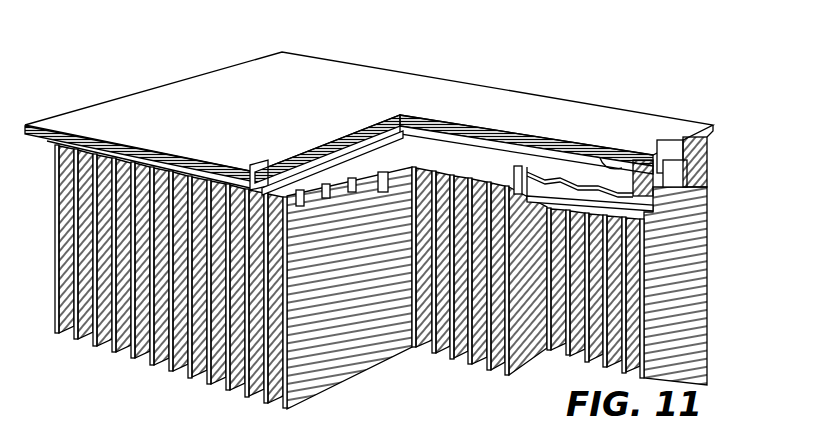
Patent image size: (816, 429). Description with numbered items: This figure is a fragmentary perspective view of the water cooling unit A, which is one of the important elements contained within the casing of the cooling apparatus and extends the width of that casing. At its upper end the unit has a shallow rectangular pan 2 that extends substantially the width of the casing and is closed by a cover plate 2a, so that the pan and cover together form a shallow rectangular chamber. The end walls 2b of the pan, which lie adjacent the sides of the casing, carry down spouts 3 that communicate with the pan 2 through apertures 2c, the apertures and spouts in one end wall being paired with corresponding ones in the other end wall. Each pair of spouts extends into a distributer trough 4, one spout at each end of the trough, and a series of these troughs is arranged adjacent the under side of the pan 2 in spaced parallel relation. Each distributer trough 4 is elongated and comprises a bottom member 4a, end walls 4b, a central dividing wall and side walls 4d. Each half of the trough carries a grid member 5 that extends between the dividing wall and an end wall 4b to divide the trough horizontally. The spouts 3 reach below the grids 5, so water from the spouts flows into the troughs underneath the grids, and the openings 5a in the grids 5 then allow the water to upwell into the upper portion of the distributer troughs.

The water cooling unit A is at (383, 106).
The shallow rectangular pan 2 is at (457, 130).
The cover plate 2a is at (433, 113).
The end walls 2b is at (625, 158).
The apertures 2c is at (607, 160).
The down spouts 3 is at (648, 157).
The distributer trough 4 is at (328, 198).
The bottom member 4a is at (380, 195).
The end walls 4b is at (700, 187).
The side walls 4d is at (383, 133).
The grid member 5 is at (357, 163).
The openings 5a is at (555, 180).